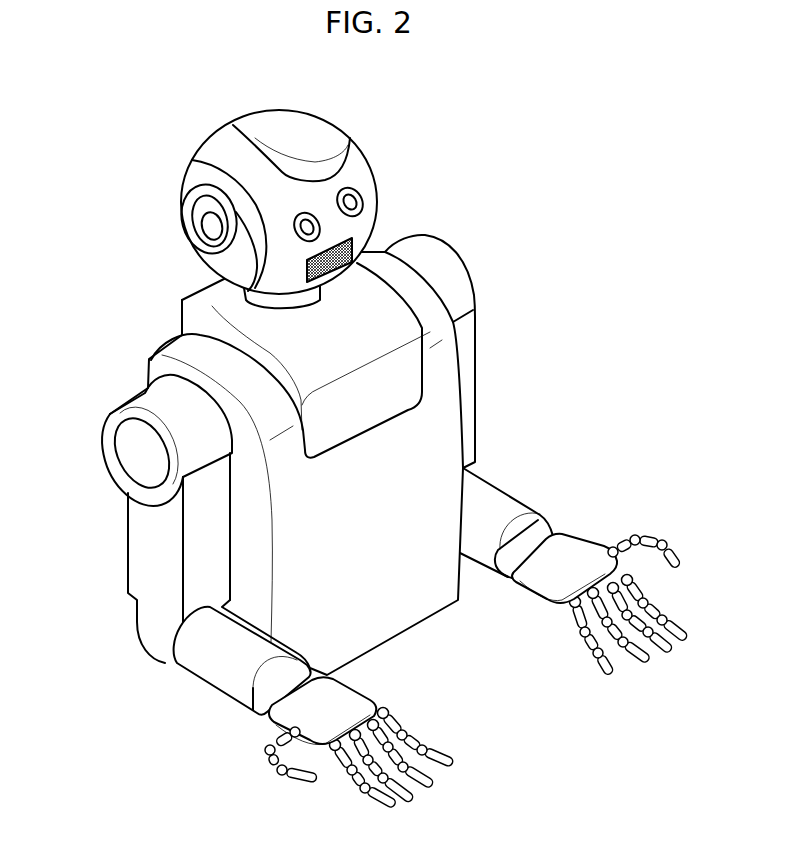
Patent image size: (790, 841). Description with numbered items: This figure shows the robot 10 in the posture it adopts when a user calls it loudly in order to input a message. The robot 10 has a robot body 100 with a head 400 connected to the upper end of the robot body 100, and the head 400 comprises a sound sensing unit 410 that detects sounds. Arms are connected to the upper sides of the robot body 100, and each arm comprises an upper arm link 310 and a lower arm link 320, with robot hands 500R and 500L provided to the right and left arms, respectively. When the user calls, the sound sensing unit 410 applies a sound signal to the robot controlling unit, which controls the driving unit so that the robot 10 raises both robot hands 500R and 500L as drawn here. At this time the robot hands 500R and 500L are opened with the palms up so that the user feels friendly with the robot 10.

The robot 10 is at (490, 188).
The robot body 100 is at (445, 427).
The upper arm link 310 is at (147, 547).
The lower arm link 320 is at (187, 662).
The head 400 is at (165, 168).
The sound sensing unit 410 is at (210, 226).
The left robot hand 500L is at (605, 497).
The right robot hand 500R is at (220, 737).